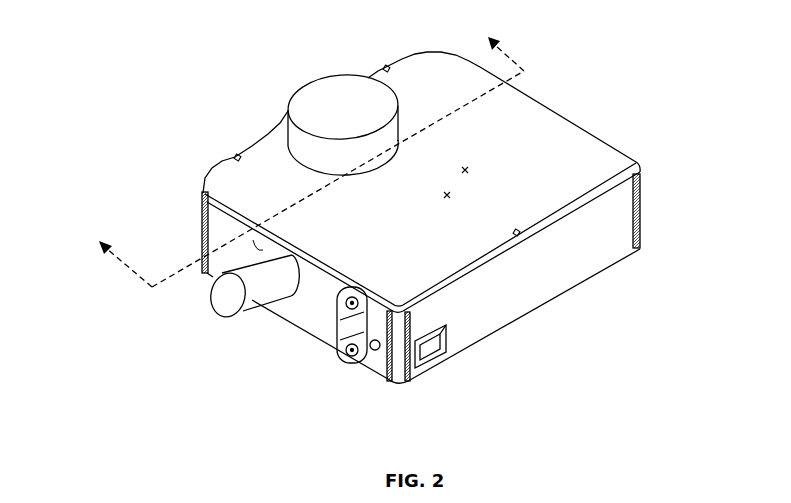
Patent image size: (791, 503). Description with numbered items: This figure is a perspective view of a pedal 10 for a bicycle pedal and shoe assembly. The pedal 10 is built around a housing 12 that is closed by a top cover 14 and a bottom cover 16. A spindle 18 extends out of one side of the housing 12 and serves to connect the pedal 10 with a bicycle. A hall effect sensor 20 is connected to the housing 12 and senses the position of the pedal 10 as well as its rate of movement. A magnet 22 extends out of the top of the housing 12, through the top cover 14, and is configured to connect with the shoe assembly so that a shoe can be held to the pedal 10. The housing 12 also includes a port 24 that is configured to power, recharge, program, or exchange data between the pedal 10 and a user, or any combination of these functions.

The pedal 10 is at (192, 110).
The housing 12 is at (632, 252).
The top cover 14 is at (638, 167).
The bottom cover 16 is at (576, 262).
The spindle 18 is at (210, 276).
The hall effect sensor 20 is at (340, 335).
The magnet 22 is at (402, 103).
The port 24 is at (445, 357).